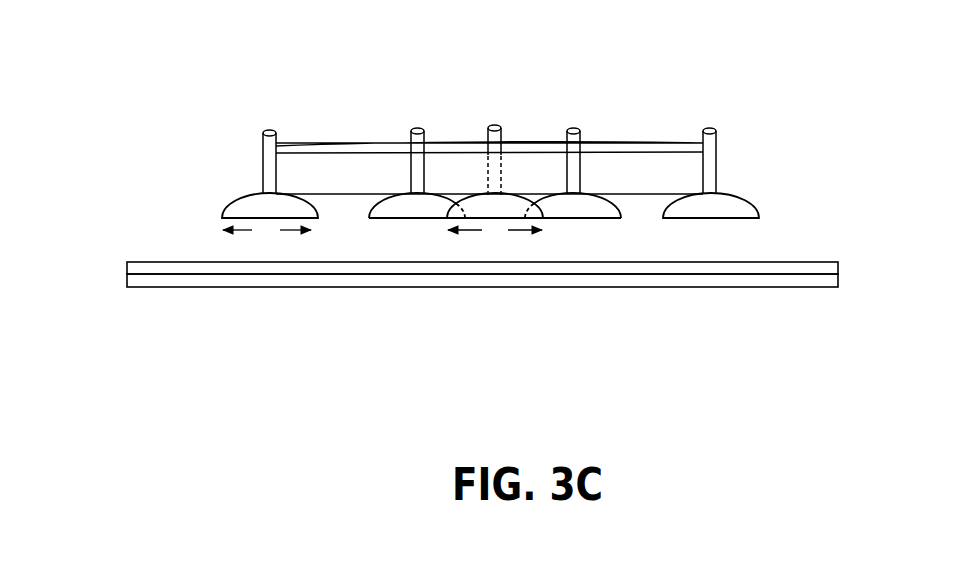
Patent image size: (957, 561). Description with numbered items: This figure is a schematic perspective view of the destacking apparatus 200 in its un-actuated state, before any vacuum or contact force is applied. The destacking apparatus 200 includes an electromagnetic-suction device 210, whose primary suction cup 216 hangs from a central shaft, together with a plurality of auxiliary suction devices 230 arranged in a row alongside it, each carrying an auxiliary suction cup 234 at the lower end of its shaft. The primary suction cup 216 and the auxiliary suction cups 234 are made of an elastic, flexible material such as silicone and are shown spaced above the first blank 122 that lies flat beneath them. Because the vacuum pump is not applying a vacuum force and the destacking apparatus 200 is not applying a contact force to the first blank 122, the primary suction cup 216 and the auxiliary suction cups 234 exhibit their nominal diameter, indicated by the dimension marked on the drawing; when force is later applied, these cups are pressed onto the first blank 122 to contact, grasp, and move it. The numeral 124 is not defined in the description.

The destacking apparatus 200 is at (640, 73).
The electromagnetic-suction device 210 is at (466, 110).
The primary suction cup 216 is at (510, 213).
The auxiliary suction devices 230 is at (200, 180).
The auxiliary suction cup 234 is at (288, 207).
The first blank 122 is at (838, 262).
The substrate lower layer 124 is at (840, 281).